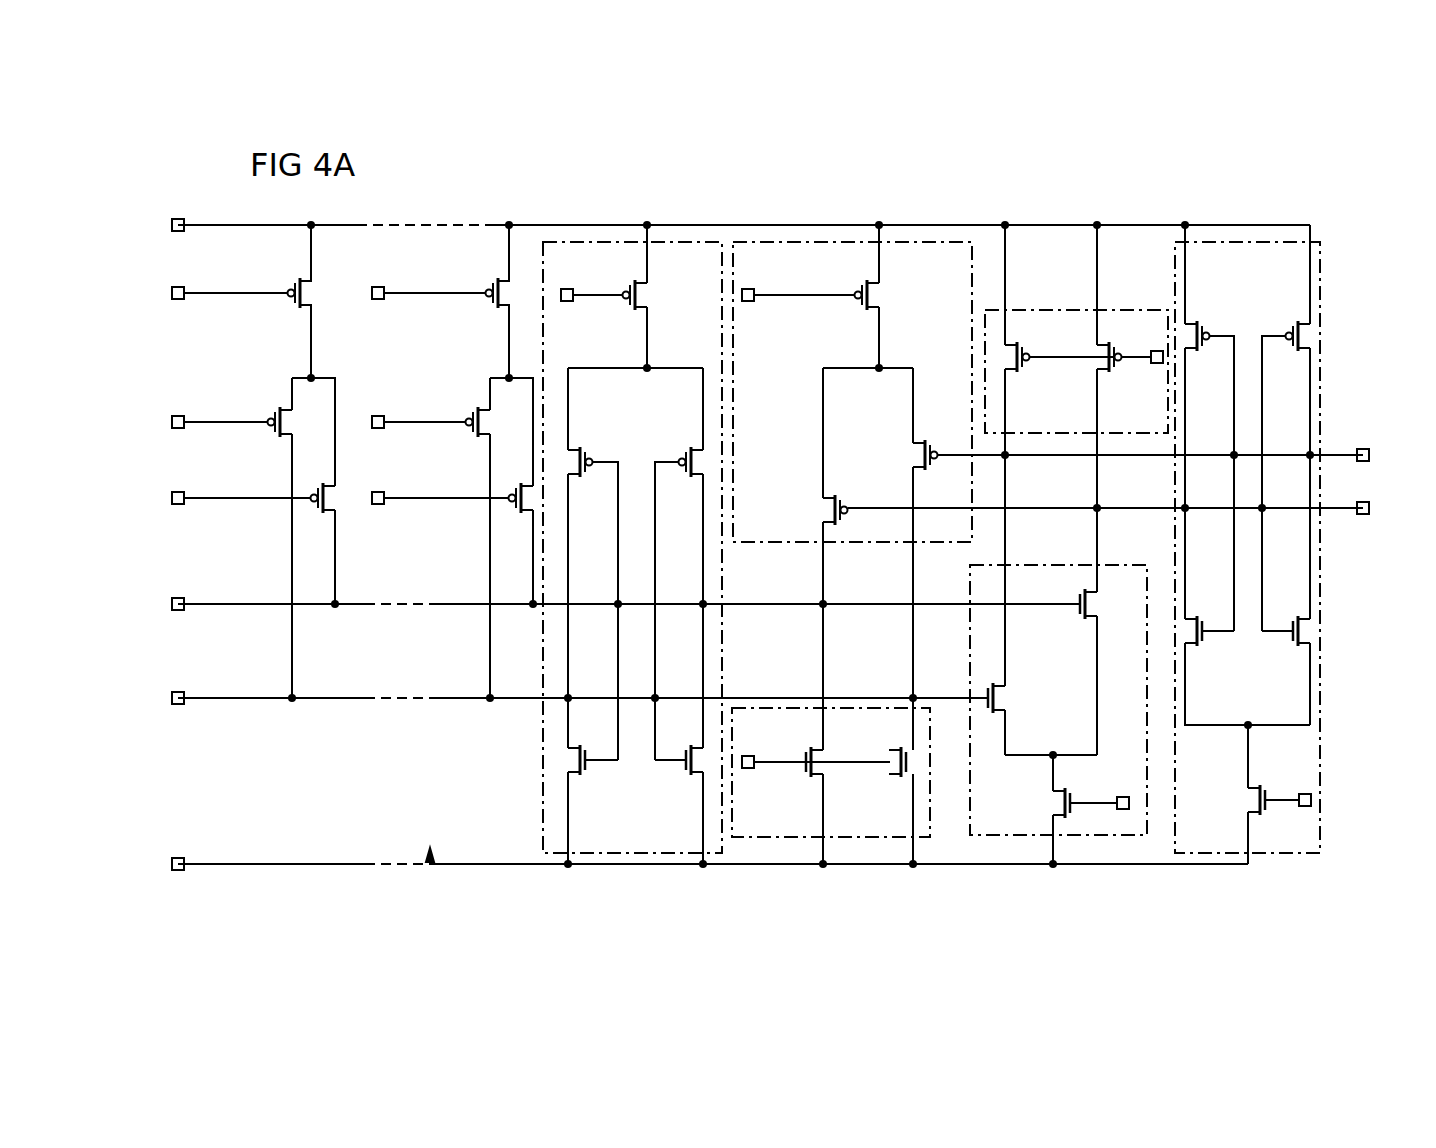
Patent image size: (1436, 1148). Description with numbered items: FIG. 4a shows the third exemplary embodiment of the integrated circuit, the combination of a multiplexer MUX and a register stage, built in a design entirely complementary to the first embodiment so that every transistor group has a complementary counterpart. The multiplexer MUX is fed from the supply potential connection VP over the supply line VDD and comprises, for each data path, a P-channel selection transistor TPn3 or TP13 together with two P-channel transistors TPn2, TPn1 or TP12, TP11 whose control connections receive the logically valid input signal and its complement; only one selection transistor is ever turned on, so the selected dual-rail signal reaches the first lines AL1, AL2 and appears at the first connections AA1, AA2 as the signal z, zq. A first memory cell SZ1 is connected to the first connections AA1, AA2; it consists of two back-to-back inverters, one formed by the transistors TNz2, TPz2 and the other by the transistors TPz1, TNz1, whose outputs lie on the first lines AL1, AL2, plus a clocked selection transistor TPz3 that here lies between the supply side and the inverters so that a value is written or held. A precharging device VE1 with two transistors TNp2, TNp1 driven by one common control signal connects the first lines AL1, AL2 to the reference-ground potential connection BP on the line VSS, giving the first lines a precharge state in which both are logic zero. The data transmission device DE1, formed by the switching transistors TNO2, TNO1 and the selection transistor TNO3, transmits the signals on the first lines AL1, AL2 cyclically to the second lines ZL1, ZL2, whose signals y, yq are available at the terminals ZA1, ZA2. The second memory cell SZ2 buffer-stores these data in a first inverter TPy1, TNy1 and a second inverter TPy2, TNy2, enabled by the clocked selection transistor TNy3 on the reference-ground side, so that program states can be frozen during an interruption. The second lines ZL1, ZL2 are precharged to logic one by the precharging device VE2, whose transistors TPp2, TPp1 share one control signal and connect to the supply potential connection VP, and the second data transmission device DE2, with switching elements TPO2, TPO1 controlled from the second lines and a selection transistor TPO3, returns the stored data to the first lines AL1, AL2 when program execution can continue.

The supply potential connection VP is at (180, 218).
The supply potential VDD is at (744, 211).
The reference potential VSS is at (713, 849).
The reference-ground potential connection BP is at (182, 872).
The multiplexer MUX is at (430, 862).
The selection transistor TPn3 is at (290, 306).
The transistor TPn2 is at (275, 435).
The transistor TPn1 is at (312, 512).
The selection transistor TP13 is at (488, 306).
The transistor TP12 is at (473, 435).
The transistor TP11 is at (510, 512).
The first connection AA1 is at (182, 612).
The first connection AA2 is at (182, 706).
The first line AL1 is at (455, 612).
The first line AL2 is at (455, 706).
The dual-rail signal z is at (629, 591).
The dual-rail signal zq is at (583, 685).
The memory cell SZ1 is at (630, 855).
The selection transistor TPz3 is at (645, 300).
The transistor TPz2 is at (595, 460).
The transistor TPz1 is at (680, 450).
The transistor TNz2 is at (592, 770).
The transistor TNz1 is at (684, 775).
The second data transmission device DE2 is at (822, 242).
The selection transistor TPO3 is at (877, 300).
The switching element TPO2 is at (918, 456).
The switching element TPO1 is at (828, 513).
The precharging device VE1 is at (846, 838).
The transistor TNp2 is at (802, 775).
The transistor TNp1 is at (898, 775).
The precharging device VE2 is at (1050, 310).
The transistor TPp2 is at (1022, 372).
The transistor TPp1 is at (1114, 372).
The second line ZL1 is at (1035, 458).
The second line ZL2 is at (1116, 511).
The data transmission device DE1 is at (1000, 836).
The transistor TNO2 is at (1080, 618).
The transistor TNO1 is at (1000, 702).
The selection transistor TNO3 is at (1058, 806).
The second memory cell SZ2 is at (1286, 855).
The transistor TPy2 is at (1210, 330).
The transistor TPy1 is at (1292, 326).
The transistor TNy2 is at (1208, 645).
The transistor TNy1 is at (1290, 650).
The selection transistor TNy3 is at (1255, 806).
The output signal y is at (1151, 443).
The output signal yq is at (1106, 496).
The first output terminal ZA1 is at (1362, 446).
The second output terminal ZA2 is at (1362, 518).